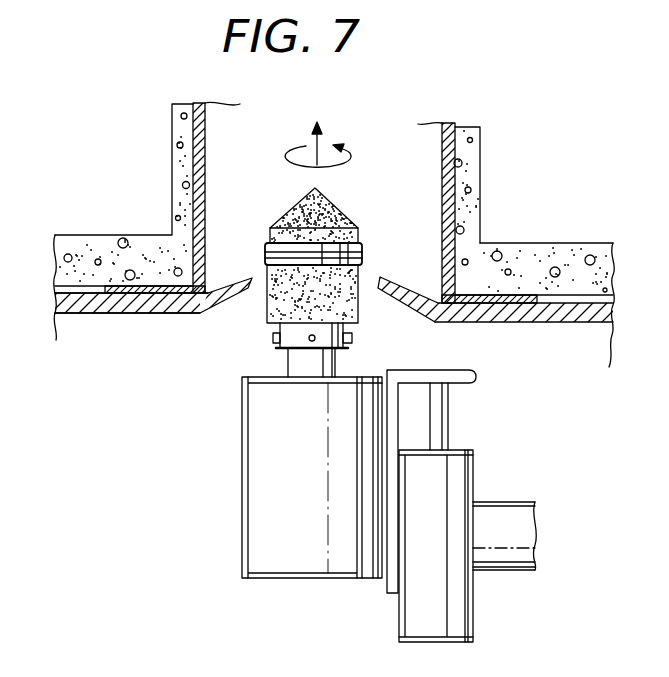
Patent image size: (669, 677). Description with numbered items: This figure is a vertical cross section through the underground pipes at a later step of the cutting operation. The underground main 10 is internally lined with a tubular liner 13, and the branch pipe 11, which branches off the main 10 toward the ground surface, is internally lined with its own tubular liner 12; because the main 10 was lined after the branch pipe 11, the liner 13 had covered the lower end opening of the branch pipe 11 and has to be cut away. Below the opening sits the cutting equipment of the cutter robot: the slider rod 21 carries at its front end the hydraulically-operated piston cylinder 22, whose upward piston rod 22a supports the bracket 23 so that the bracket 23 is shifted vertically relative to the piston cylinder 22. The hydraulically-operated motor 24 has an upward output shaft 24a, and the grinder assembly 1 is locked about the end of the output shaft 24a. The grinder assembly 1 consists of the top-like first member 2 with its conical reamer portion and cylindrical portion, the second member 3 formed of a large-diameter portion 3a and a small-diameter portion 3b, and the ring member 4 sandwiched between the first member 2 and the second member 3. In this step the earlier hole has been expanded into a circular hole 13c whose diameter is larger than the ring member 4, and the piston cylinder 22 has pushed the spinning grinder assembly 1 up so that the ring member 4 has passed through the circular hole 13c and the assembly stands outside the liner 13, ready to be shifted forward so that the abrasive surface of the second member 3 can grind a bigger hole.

The grinder assembly 1 is at (303, 222).
The first member 2 is at (292, 205).
The second member 3 is at (261, 348).
The large-diameter portion 3a is at (267, 313).
The small-diameter portion 3b is at (280, 350).
The ring member 4 is at (270, 258).
The underground main 10 is at (548, 245).
The branch pipe 11 is at (482, 180).
The tubular liner 12 is at (207, 152).
The tubular liner 13 is at (552, 324).
The circular hole 13c is at (378, 278).
The slider rod 21 is at (505, 505).
The hydraulically-operated piston cylinder 22 is at (473, 608).
The piston rod 22a is at (448, 417).
The bracket 23 is at (442, 372).
The hydraulically-operated motor 24 is at (248, 497).
The output shaft 24a is at (335, 363).